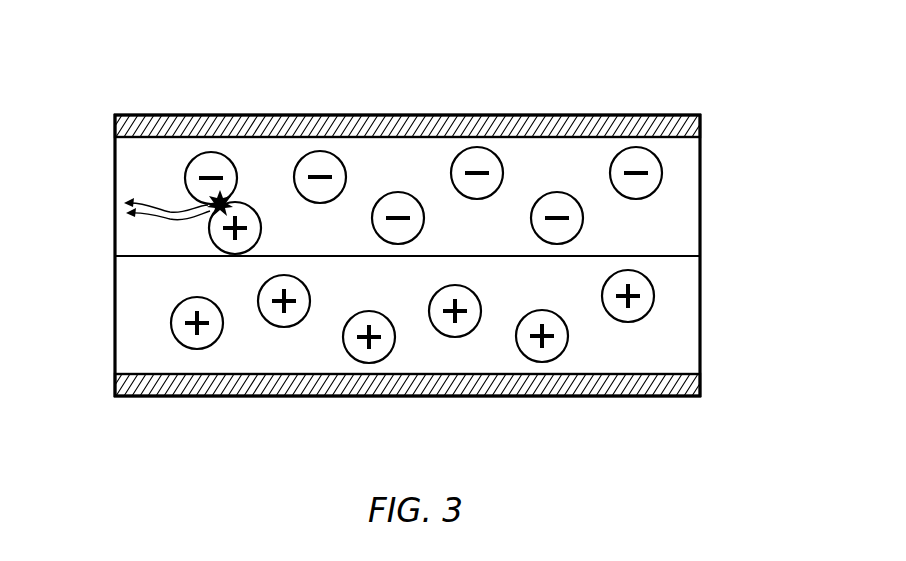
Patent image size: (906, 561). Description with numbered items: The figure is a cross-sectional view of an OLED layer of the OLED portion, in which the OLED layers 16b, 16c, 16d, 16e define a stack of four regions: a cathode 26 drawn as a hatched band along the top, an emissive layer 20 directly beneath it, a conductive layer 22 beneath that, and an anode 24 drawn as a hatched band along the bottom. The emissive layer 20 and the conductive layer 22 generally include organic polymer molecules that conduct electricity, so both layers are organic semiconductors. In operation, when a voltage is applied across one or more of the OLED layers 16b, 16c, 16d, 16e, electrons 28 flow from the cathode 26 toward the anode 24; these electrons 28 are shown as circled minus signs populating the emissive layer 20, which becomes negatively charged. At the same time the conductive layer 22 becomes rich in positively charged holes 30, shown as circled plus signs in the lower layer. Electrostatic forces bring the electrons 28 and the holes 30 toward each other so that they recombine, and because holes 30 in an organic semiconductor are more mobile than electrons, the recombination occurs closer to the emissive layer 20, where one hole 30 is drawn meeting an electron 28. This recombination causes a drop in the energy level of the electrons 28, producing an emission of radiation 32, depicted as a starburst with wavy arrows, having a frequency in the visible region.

The OLED layer 16b is at (73, 72).
The OLED layer 16c is at (401, 204).
The OLED layer 16d is at (407, 204).
The OLED layer 16e is at (407, 204).
The emissive layer 20 is at (683, 193).
The conductive layer 22 is at (685, 331).
The anode 24 is at (693, 382).
The cathode 26 is at (693, 127).
The electrons 28 is at (637, 200).
The holes 30 is at (655, 297).
The radiation 32 is at (152, 212).